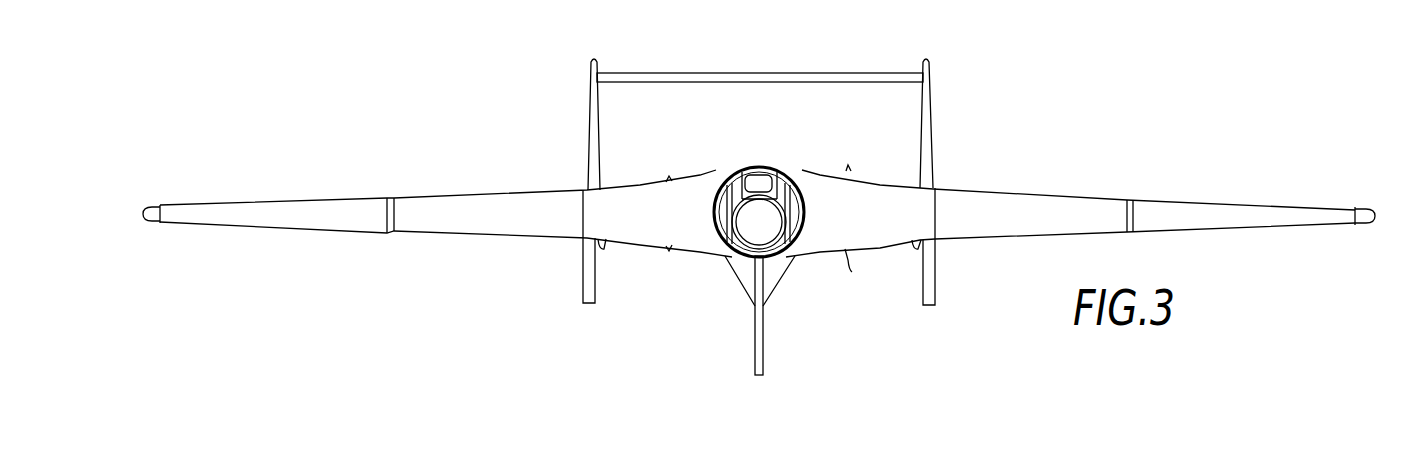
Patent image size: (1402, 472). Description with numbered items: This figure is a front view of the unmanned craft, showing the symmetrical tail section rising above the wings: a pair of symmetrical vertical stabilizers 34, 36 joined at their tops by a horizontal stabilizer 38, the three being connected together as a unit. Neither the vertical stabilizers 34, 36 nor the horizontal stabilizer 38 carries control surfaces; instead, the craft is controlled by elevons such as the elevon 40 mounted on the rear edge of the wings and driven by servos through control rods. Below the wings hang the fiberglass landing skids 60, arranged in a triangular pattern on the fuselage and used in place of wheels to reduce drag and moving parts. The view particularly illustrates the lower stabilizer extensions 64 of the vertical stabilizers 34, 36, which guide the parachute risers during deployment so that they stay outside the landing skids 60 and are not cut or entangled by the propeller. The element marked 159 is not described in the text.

The vertical stabilizer 34 is at (933, 134).
The vertical stabilizer 36 is at (588, 130).
The horizontal stabilizer 38 is at (748, 72).
The elevon 40 is at (718, 240).
The landing skids 60 is at (583, 280).
The lower stabilizer extensions 64 is at (605, 249).
The antenna 159 is at (838, 277).